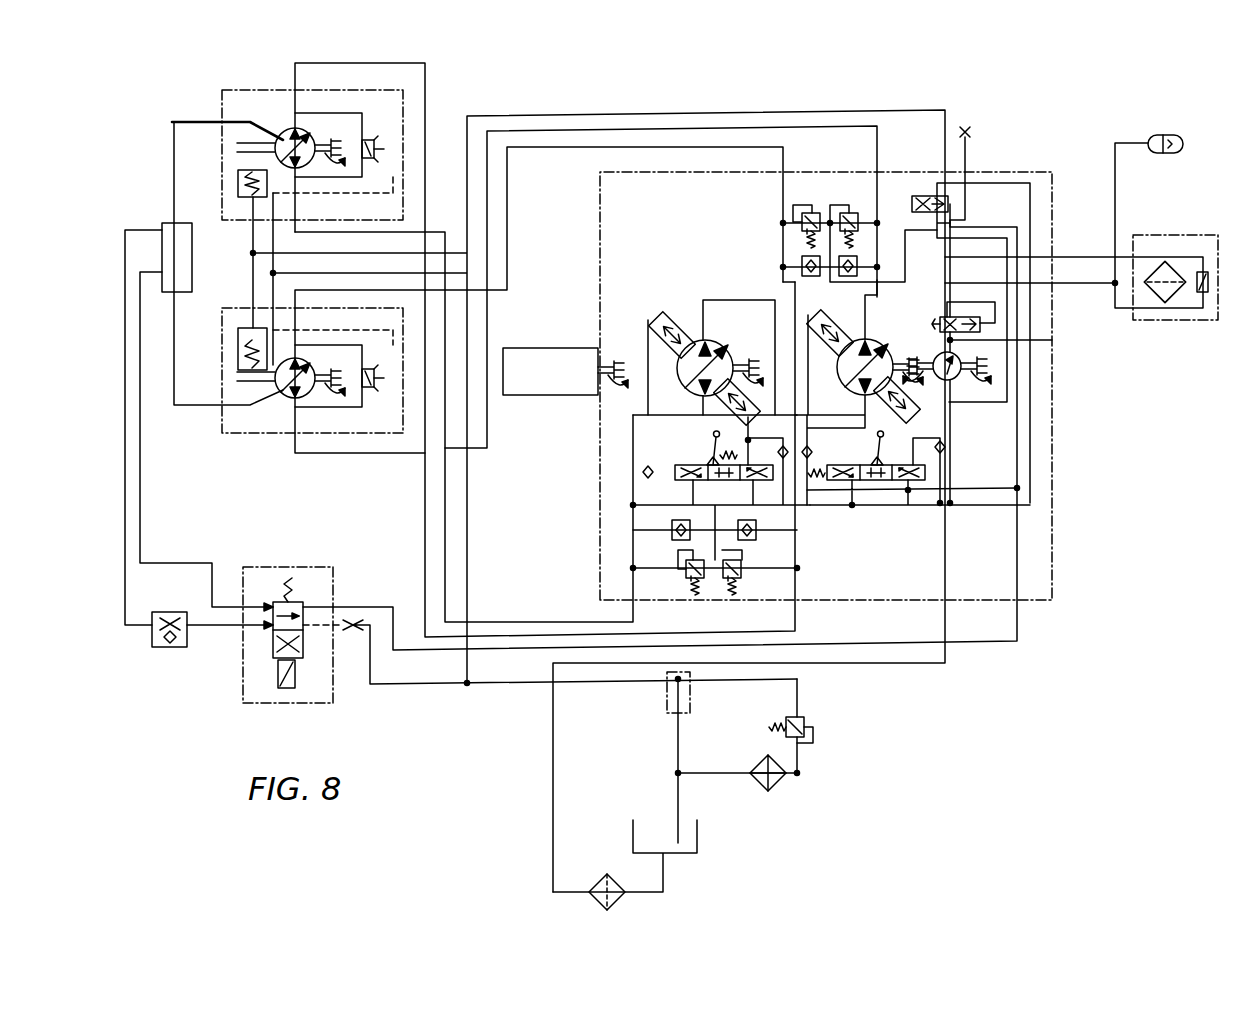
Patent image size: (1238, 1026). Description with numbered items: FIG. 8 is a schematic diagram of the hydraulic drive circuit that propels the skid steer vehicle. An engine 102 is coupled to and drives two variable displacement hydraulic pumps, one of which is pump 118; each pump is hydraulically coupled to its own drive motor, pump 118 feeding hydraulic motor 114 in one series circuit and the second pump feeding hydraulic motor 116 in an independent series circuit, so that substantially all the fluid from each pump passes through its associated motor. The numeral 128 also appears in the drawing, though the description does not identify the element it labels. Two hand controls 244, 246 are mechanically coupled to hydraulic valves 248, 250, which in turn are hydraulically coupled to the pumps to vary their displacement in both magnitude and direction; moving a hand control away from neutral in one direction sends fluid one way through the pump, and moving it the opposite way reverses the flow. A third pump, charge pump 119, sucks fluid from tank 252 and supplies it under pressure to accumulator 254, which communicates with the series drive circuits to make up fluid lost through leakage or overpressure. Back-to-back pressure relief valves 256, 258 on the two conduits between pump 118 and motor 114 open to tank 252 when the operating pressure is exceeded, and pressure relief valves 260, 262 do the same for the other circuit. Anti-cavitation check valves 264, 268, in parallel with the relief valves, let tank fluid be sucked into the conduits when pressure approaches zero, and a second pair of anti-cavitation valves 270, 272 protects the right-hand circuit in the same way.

The engine 102 is at (565, 371).
The hydraulic motor 114 is at (283, 130).
The hydraulic motor 116 is at (283, 392).
The variable displacement hydraulic pump 118 is at (697, 338).
The charge pump 119 is at (968, 380).
The second hydraulic motor 128 is at (866, 335).
The hand control 244 is at (702, 440).
The hand control 246 is at (886, 436).
The hydraulic valve 248 is at (675, 489).
The hydraulic valve 250 is at (878, 511).
The tank 252 is at (700, 828).
The accumulator 254 is at (1148, 137).
The pressure relief valve 256 is at (687, 574).
The pressure relief valve 258 is at (742, 574).
The pressure relief valve 260 is at (850, 212).
The pressure relief valve 262 is at (813, 212).
The anti-cavitation valve 264 is at (670, 530).
The anti-cavitation valve 268 is at (757, 524).
The anti-cavitation valve 270 is at (802, 252).
The anti-cavitation valve 272 is at (857, 252).